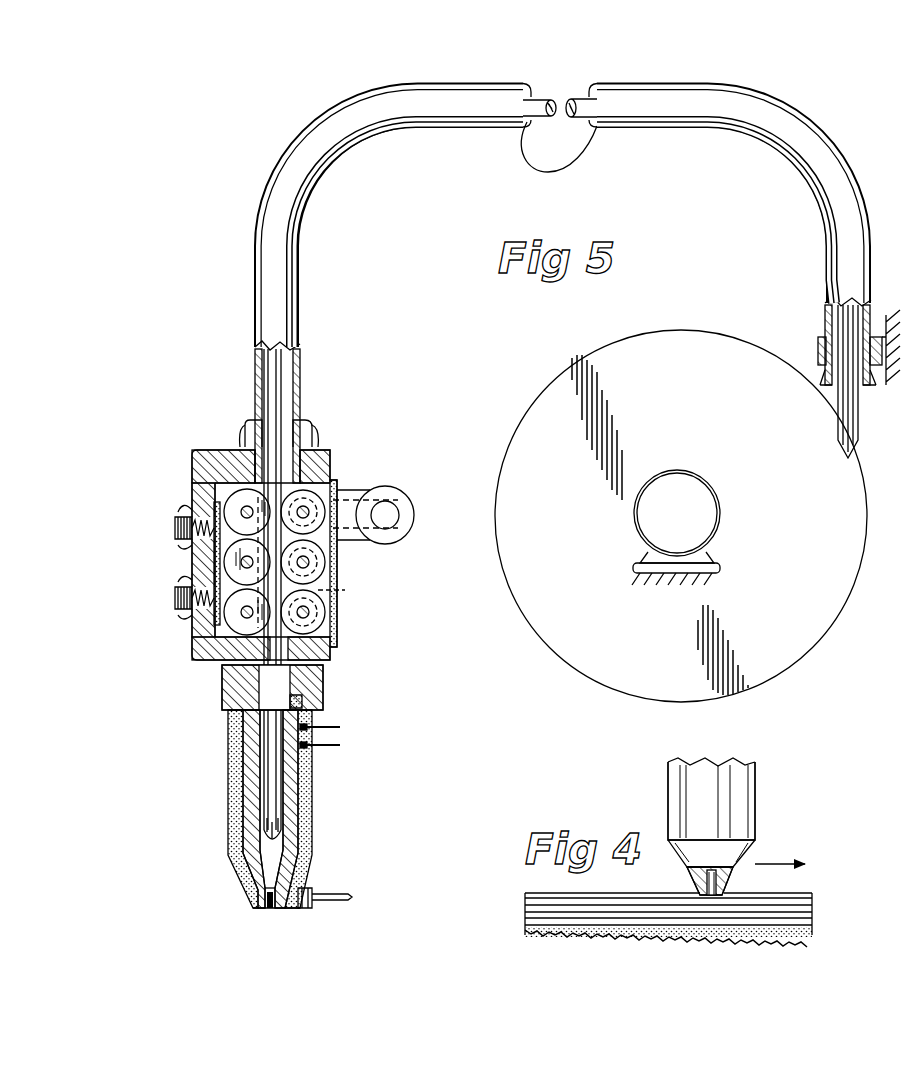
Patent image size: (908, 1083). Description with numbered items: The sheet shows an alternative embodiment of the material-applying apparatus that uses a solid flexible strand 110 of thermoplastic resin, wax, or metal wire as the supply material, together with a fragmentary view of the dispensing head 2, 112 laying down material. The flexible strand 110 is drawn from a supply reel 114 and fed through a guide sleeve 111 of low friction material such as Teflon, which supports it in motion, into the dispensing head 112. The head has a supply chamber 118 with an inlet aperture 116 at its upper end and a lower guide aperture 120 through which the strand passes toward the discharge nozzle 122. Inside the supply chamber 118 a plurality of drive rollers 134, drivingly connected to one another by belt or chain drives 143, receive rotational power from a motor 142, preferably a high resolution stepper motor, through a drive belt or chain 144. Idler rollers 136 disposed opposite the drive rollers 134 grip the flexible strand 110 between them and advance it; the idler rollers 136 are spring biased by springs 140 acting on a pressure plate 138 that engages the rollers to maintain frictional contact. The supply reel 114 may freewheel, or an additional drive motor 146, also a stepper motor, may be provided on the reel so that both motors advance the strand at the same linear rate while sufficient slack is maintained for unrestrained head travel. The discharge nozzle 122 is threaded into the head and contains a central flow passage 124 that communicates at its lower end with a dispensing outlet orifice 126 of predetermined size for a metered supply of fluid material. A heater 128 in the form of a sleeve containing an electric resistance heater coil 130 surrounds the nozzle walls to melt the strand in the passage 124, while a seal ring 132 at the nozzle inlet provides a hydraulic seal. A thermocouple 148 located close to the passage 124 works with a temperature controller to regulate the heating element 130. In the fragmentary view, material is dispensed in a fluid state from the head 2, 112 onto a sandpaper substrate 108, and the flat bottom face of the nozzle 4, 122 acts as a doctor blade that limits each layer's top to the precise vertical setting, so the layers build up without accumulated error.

In FIG. 4, the dispensing head 2 is at (711, 801).
In FIG. 4, the nozzle 4 is at (710, 881).
In FIG. 4, the substrate 108 is at (690, 937).
In FIG. 5, the flexible strand 110 is at (266, 798).
In FIG. 5, the guide sleeve 111 is at (872, 405).
In FIG. 5, the dispensing head 112 is at (253, 807).
In FIG. 4, the dispensing head 112 is at (766, 796).
In FIG. 5, the supply reel 114 is at (542, 636).
In FIG. 5, the inlet aperture 116 is at (256, 440).
In FIG. 5, the supply chamber 118 is at (318, 642).
In FIG. 5, the lower guide aperture 120 is at (222, 675).
In FIG. 5, the discharge nozzle 122 is at (260, 800).
In FIG. 4, the discharge nozzle 122 is at (728, 882).
In FIG. 5, the flow passage 124 is at (282, 874).
In FIG. 5, the dispensing outlet orifice 126 is at (268, 908).
In FIG. 5, the heater 128 is at (238, 830).
In FIG. 5, the electric resistance heater coil 130 is at (236, 742).
In FIG. 5, the seal ring 132 is at (302, 703).
In FIG. 5, the drive rollers 134 is at (320, 560).
In FIG. 5, the idler rollers 136 is at (212, 452).
In FIG. 5, the pressure plate 138 is at (192, 547).
In FIG. 5, the springs 140 is at (192, 500).
In FIG. 5, the motor 142 is at (423, 482).
In FIG. 5, the belt or chain drives 143 is at (345, 592).
In FIG. 5, the drive belt or chain 144 is at (356, 500).
In FIG. 5, the drive motor 146 is at (681, 473).
In FIG. 5, the thermocouple 148 is at (306, 908).